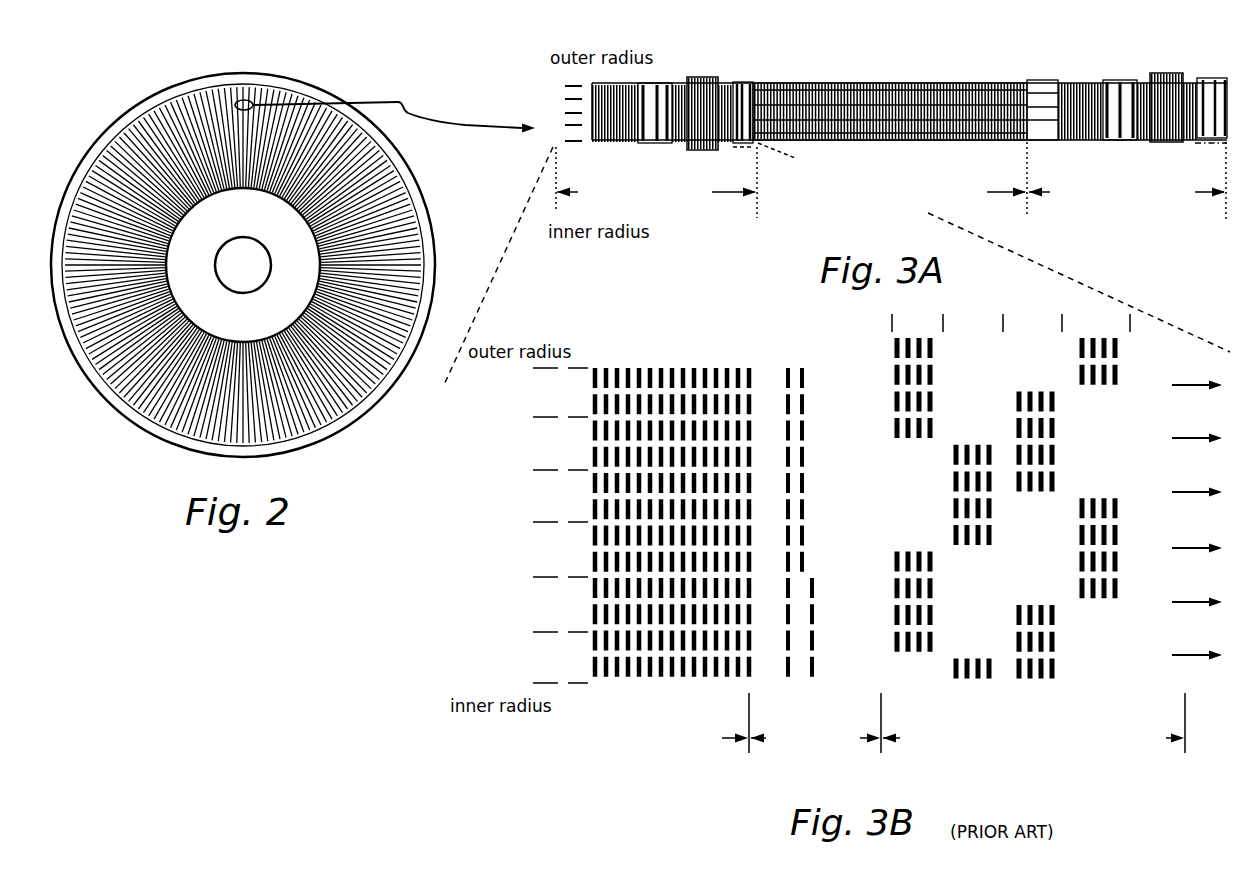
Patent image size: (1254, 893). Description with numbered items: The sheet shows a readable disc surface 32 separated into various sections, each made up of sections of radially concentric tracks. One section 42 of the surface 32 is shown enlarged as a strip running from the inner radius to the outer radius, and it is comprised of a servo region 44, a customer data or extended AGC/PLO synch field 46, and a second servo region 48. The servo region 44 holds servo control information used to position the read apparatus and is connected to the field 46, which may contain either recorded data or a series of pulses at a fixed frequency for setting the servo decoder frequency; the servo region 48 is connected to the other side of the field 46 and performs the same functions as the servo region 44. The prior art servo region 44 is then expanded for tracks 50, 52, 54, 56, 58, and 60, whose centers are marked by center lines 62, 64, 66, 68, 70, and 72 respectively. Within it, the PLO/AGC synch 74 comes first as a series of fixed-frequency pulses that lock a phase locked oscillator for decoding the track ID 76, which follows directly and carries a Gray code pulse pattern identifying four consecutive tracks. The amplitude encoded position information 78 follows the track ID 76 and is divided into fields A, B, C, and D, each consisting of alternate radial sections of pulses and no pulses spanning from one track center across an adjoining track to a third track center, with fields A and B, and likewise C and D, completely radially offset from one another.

In FIG. 2, the surface 32 is at (298, 80).
In FIG. 3A, the section 42 is at (891, 144).
In FIG. 3A, the servo region 44 is at (747, 192).
In FIG. 3A, the customer data or extended AGC/PLO synch field 46 is at (1003, 191).
In FIG. 3A, the servo region 48 is at (1210, 191).
In FIG. 3B, the track 50 is at (638, 391).
In FIG. 3B, the track 52 is at (638, 444).
In FIG. 3B, the track 54 is at (638, 496).
In FIG. 3B, the track 56 is at (638, 549).
In FIG. 3B, the track 58 is at (643, 601).
In FIG. 3B, the track 60 is at (643, 654).
In FIG. 3B, the center line 62 is at (1187, 385).
In FIG. 3B, the center line 64 is at (1190, 438).
In FIG. 3B, the center line 66 is at (1190, 492).
In FIG. 3B, the center line 68 is at (1187, 548).
In FIG. 3B, the center line 70 is at (1190, 602).
In FIG. 3B, the center line 72 is at (1190, 655).
In FIG. 3B, the PLO/AGC synch 74 is at (735, 740).
In FIG. 3B, the track ID 76 is at (870, 740).
In FIG. 3B, the amplitude encoded position information 78 is at (1098, 793).